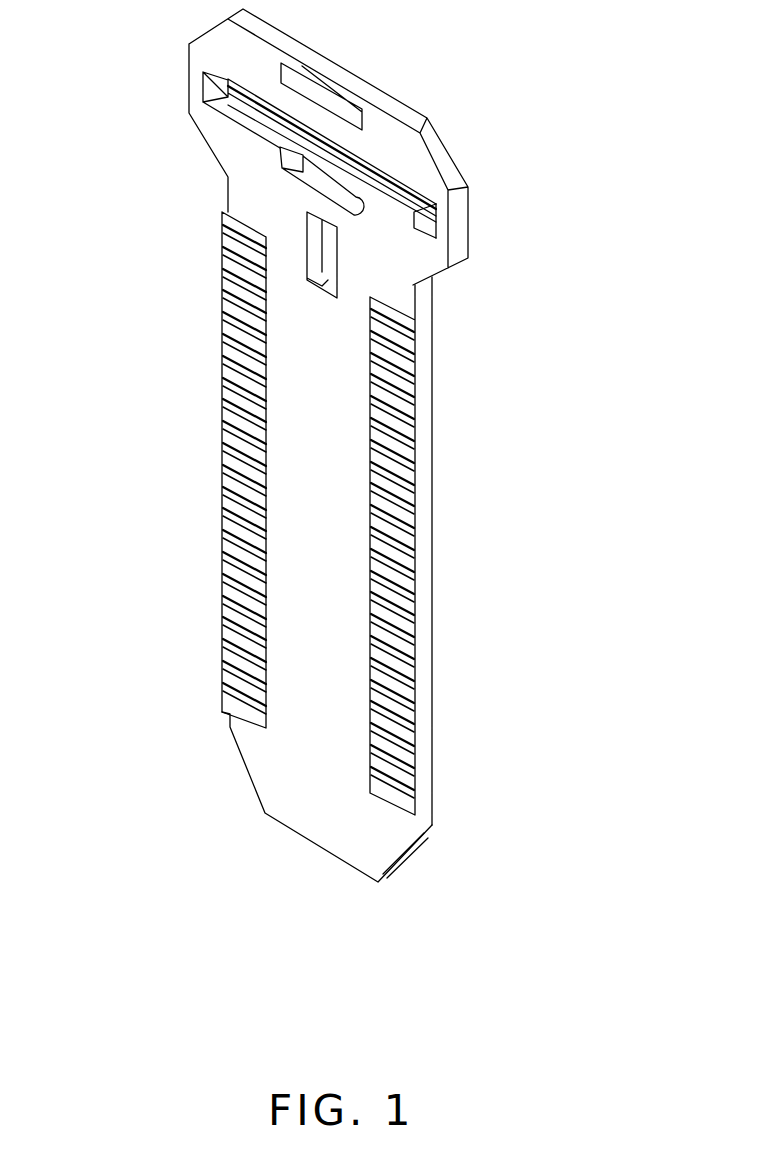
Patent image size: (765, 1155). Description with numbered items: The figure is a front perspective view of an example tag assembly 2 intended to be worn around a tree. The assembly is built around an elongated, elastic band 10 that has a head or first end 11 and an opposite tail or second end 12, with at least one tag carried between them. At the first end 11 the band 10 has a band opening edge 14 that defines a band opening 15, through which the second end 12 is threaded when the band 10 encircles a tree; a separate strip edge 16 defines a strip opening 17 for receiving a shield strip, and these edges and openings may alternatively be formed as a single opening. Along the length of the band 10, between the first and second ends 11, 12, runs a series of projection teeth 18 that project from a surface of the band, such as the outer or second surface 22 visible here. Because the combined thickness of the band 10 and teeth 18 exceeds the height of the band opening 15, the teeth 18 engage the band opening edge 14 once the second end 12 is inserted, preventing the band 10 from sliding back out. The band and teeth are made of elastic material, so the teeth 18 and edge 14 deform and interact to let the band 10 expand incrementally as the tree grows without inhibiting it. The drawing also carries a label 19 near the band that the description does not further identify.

The tag assembly 2 is at (597, 94).
The band 10 is at (300, 518).
The first end 11 is at (140, 70).
The second end 12 is at (204, 801).
The band opening edge 14 is at (423, 220).
The band opening 15 is at (423, 224).
The strip edge 16 is at (297, 178).
The strip opening 17 is at (297, 172).
The projection teeth 18 is at (222, 303).
The slot 19 is at (320, 285).
The second surface 22 is at (384, 838).